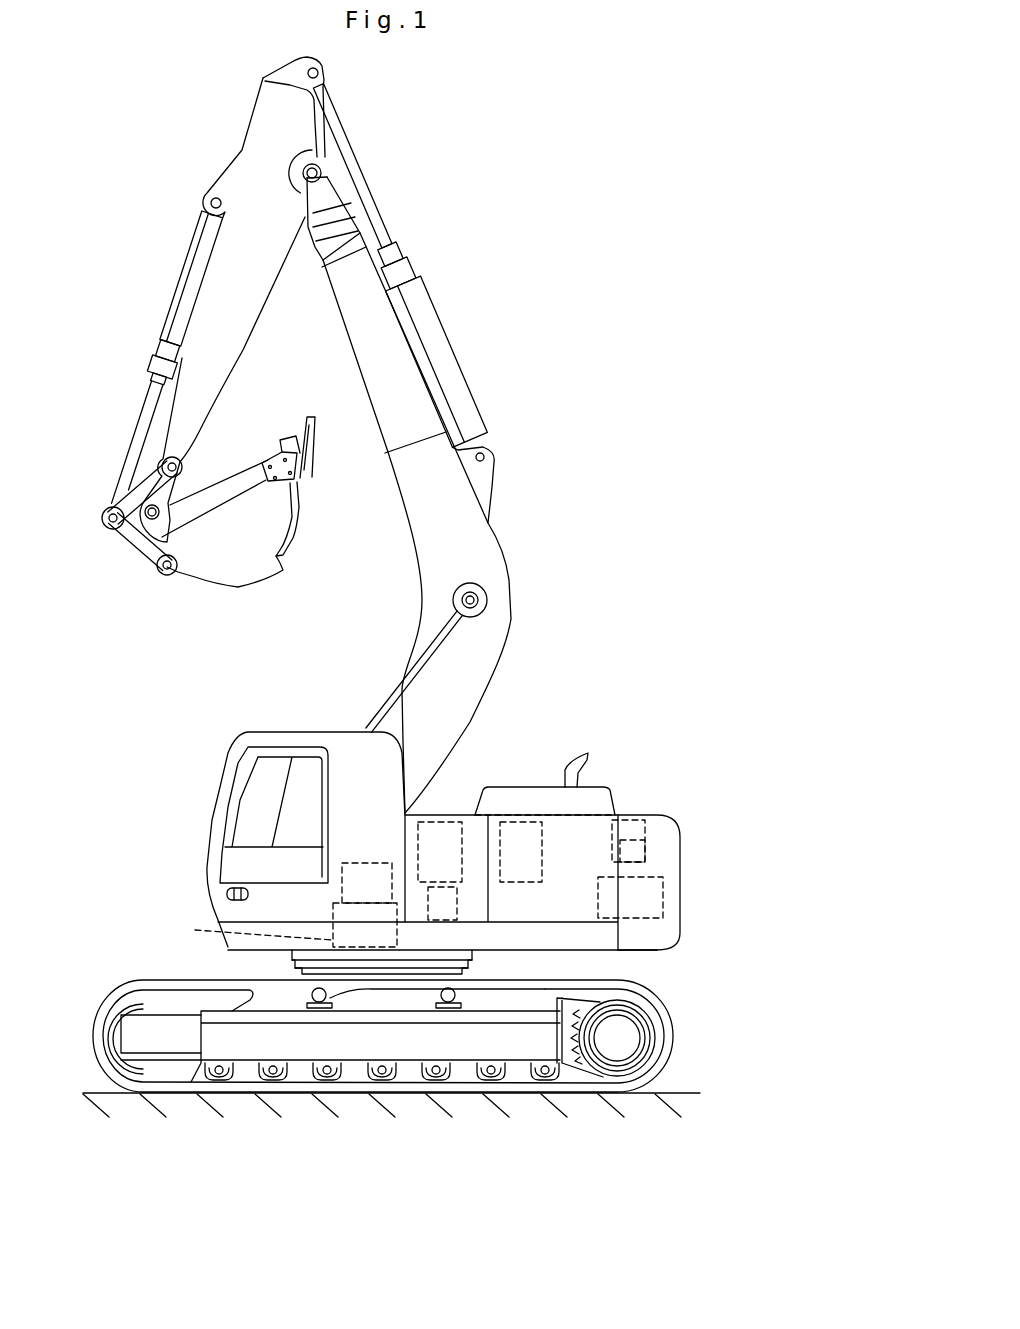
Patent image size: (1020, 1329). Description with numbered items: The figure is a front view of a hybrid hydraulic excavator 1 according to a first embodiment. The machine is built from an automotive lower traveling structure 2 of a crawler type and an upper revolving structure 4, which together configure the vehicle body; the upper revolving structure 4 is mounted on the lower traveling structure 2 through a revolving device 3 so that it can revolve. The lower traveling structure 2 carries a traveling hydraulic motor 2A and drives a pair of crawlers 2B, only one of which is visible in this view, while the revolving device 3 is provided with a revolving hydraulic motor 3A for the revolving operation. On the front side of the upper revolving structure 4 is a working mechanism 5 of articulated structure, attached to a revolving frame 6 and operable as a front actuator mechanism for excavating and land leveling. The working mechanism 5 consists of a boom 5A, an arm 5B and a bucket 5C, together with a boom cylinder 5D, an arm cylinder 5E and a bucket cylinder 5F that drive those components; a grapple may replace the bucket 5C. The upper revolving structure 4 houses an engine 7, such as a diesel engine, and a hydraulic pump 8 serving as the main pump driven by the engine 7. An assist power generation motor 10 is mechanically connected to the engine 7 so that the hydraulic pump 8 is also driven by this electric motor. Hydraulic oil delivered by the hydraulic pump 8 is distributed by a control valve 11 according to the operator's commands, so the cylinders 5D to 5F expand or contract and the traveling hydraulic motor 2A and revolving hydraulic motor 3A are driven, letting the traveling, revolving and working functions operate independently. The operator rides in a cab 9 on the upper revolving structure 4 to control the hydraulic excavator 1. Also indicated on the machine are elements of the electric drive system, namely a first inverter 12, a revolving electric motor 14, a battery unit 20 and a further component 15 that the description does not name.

The hybrid hydraulic excavator 1 is at (606, 148).
The lower traveling structure 2 is at (700, 1032).
The traveling hydraulic motor 2A is at (615, 1045).
The crawlers 2B is at (342, 1087).
The revolving device 3 is at (466, 843).
The revolving hydraulic motor 3A is at (342, 880).
The upper revolving structure 4 is at (608, 765).
The working mechanism 5 is at (182, 187).
The boom 5A is at (485, 555).
The arm 5B is at (236, 328).
The bucket 5C is at (246, 574).
The boom cylinder 5D is at (392, 692).
The arm cylinder 5E is at (457, 374).
The bucket cylinder 5F is at (176, 296).
The revolving frame 6 is at (573, 942).
The engine 7 is at (531, 815).
The hydraulic pump 8 is at (440, 822).
The cab 9 is at (263, 774).
The assist power generation motor 10 is at (483, 822).
The control valve 11 is at (458, 903).
The first inverter 12 is at (640, 820).
The revolving electric motor 14 is at (244, 934).
The electric component 15 is at (647, 842).
The battery unit 20 is at (663, 903).